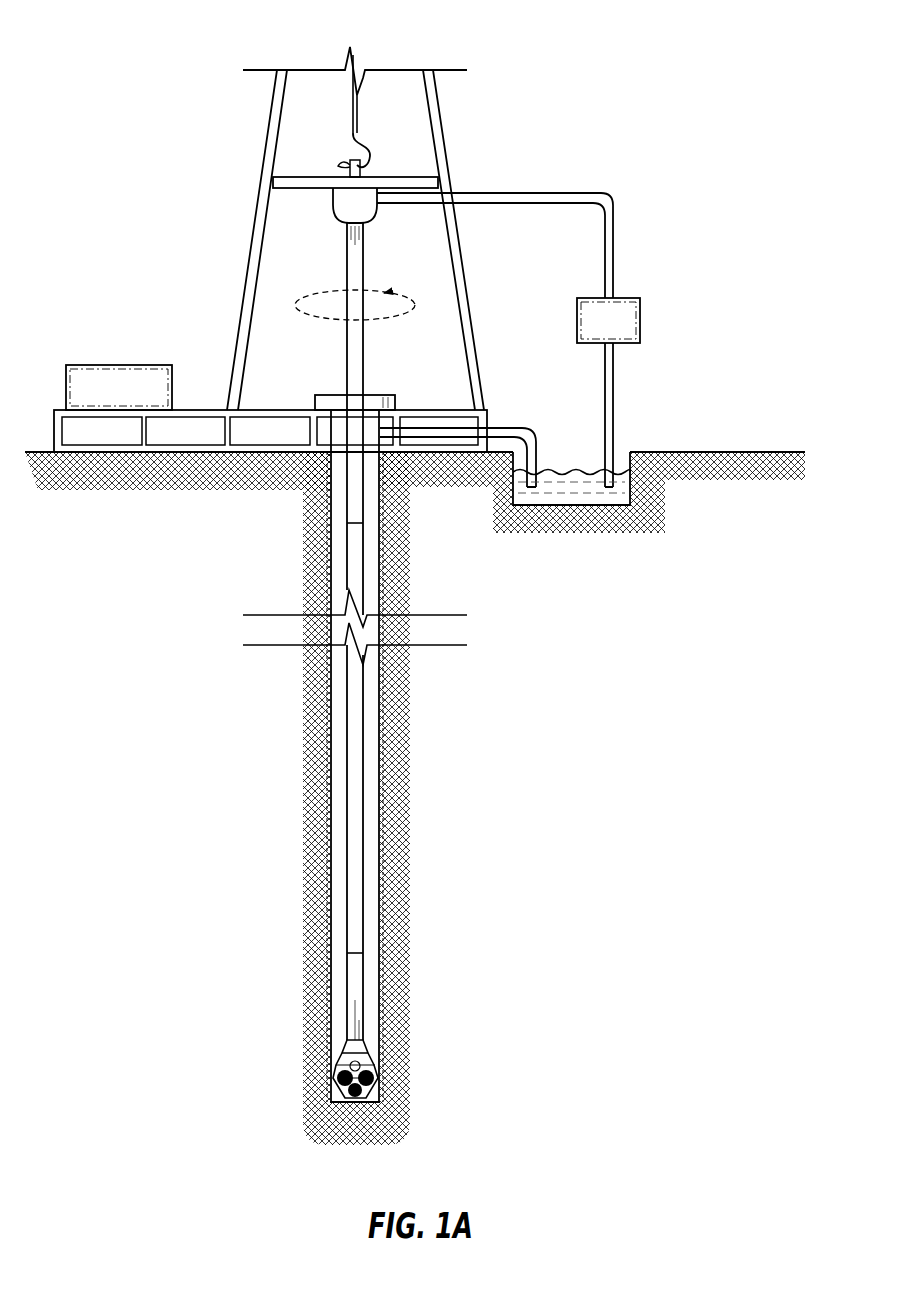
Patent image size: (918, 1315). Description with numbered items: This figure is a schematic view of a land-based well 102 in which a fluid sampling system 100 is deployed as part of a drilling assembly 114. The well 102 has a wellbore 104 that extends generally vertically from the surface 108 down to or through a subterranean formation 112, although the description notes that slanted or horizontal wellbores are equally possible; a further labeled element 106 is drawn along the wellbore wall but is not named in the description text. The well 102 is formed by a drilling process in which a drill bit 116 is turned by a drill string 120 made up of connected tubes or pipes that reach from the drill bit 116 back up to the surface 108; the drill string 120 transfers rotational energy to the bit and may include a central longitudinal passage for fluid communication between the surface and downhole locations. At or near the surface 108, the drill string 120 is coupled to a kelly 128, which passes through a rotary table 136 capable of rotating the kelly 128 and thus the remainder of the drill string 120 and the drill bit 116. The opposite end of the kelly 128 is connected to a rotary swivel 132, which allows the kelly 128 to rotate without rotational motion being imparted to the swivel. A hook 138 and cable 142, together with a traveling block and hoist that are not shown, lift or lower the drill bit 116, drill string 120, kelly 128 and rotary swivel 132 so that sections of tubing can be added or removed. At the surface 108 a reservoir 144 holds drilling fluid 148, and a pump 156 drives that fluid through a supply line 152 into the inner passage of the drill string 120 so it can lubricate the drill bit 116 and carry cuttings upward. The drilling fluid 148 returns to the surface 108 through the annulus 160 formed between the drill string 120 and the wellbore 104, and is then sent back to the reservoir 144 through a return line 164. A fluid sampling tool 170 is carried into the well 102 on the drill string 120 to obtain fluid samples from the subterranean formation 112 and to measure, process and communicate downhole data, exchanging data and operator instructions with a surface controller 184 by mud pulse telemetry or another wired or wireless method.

The fluid sampling system 100 is at (131, 47).
The well 102 is at (396, 373).
The wellbore 104 is at (335, 760).
The casing string 106 is at (375, 848).
The surface 108 is at (727, 452).
The subterranean formation 112 is at (327, 1113).
The drilling assembly 114 is at (373, 779).
The drill bit 116 is at (370, 1067).
The drill string 120 is at (347, 665).
The kelly 128 is at (352, 495).
The rotary swivel 132 is at (343, 222).
The rotary table 136 is at (328, 393).
The hook 138 is at (364, 148).
The cable 142 is at (355, 97).
The reservoir 144 is at (562, 505).
The drilling fluid 148 is at (555, 480).
The supply line 152 is at (523, 193).
The pump 156 is at (625, 298).
The annulus 160 is at (338, 787).
The return line 164 is at (503, 427).
The fluid sampling tool 170 is at (353, 935).
The surface controller 184 is at (120, 365).